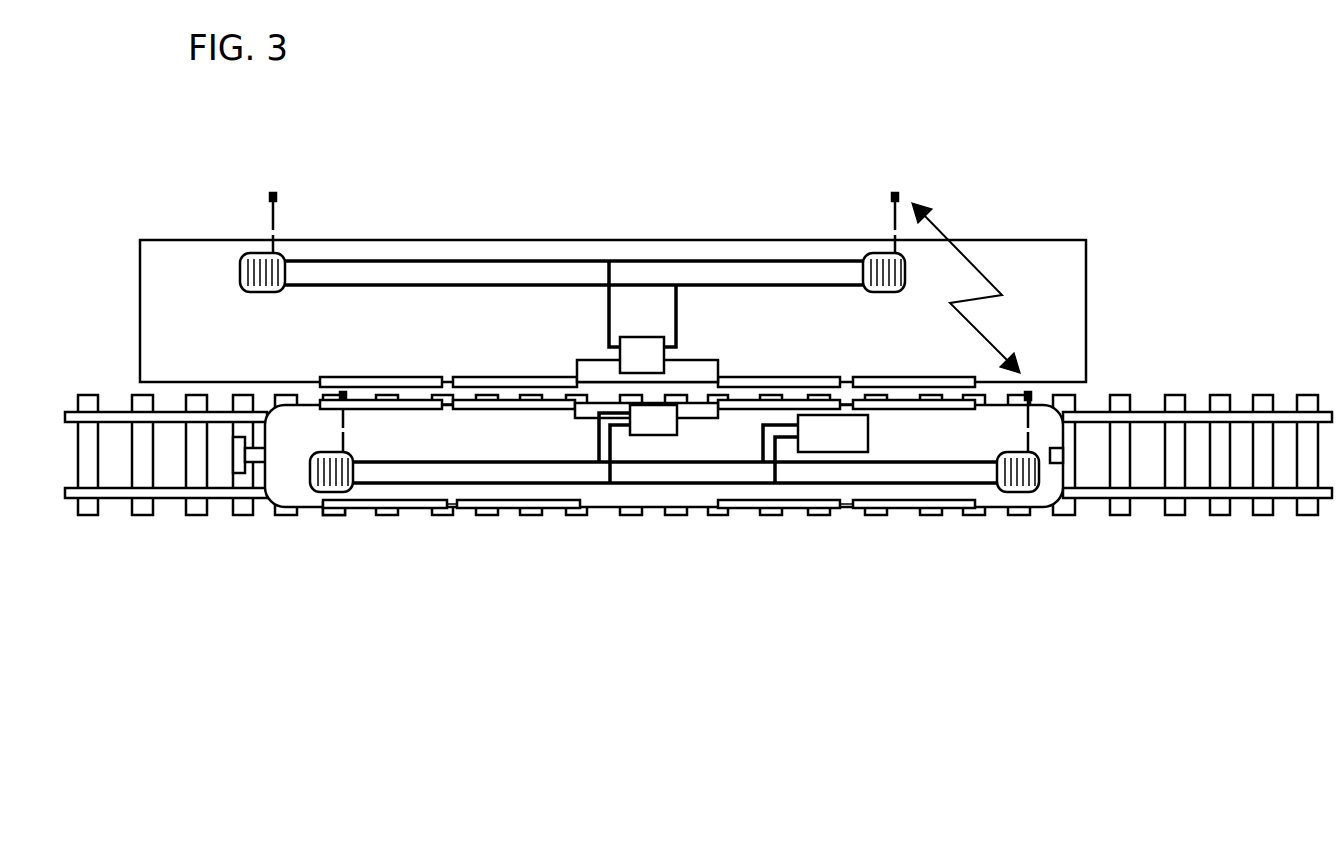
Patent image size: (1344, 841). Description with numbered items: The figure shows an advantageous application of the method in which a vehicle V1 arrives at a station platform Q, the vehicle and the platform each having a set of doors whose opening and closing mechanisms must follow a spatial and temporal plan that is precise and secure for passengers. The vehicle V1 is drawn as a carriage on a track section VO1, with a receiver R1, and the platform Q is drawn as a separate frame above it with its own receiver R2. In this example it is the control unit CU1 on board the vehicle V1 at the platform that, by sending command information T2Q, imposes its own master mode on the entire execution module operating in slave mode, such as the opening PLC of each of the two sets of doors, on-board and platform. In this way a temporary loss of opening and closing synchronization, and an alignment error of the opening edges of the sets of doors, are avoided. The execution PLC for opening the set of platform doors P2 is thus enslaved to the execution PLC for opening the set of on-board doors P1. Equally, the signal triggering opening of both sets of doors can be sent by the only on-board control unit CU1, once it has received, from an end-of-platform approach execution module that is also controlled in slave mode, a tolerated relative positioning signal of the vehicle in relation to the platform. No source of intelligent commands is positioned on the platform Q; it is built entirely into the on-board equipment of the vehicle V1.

The station platform Q is at (1030, 240).
The command information T2Q is at (997, 285).
The receiver of second vehicle R2 is at (885, 292).
The receiver of first vehicle R1 is at (1010, 492).
The vehicle V1 is at (312, 508).
The track section VO1 is at (1175, 400).
The control unit CU1 is at (868, 433).
The set of on-board doors P1 is at (735, 407).
The set of platform doors P2 is at (797, 380).